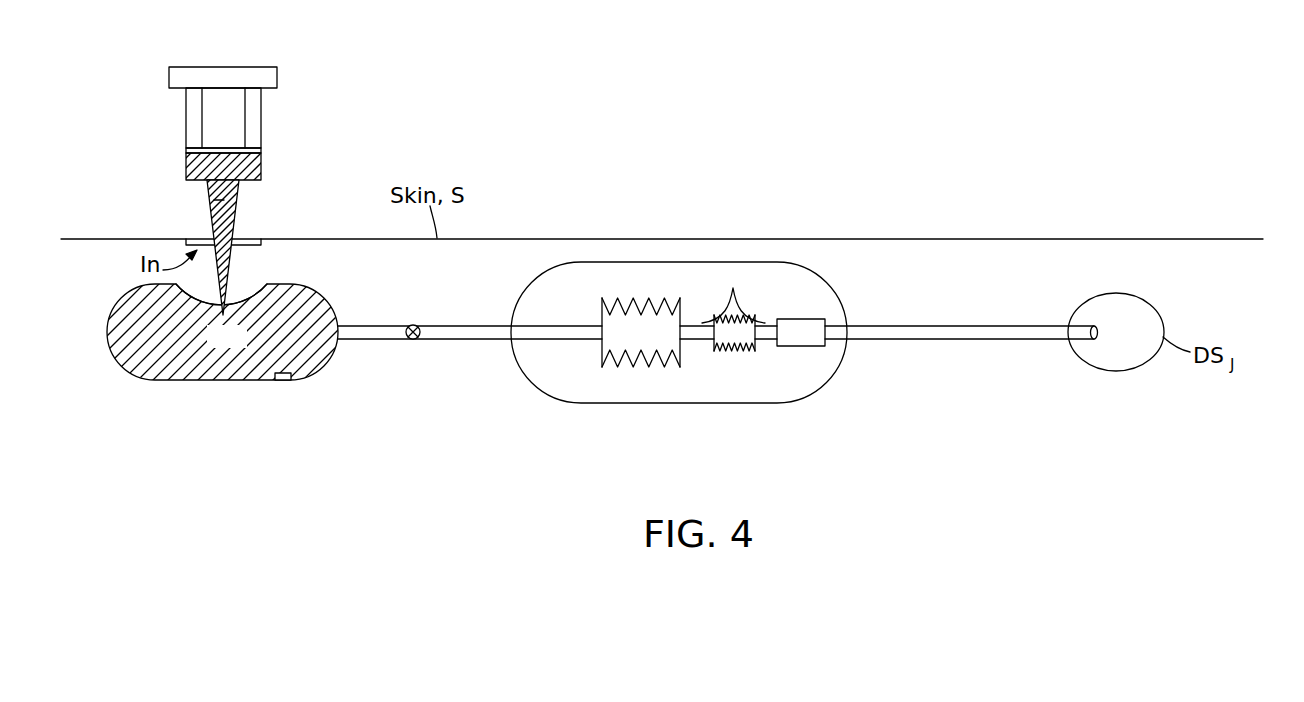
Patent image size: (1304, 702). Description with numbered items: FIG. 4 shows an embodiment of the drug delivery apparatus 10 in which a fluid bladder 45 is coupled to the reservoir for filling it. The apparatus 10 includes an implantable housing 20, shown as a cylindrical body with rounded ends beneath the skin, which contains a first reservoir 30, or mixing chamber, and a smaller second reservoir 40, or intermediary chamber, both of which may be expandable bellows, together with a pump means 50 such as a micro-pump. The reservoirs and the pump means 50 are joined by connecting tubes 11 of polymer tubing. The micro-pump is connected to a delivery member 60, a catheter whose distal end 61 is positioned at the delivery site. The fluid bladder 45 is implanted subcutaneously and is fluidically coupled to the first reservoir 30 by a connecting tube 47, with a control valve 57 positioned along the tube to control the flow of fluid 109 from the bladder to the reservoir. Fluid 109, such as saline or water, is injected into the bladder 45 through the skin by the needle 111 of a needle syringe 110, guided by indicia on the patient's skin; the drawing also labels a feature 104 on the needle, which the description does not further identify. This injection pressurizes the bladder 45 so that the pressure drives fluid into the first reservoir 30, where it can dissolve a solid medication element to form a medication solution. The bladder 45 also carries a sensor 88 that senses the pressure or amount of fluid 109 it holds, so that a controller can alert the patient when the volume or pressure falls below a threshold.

The apparatus 10 is at (679, 336).
The connecting tubes 11 is at (733, 293).
The housing 20 is at (690, 388).
The first reservoir 30 is at (640, 312).
The second reservoir 40 is at (736, 337).
The fluid bladder 45 is at (218, 380).
The connecting tube 47 is at (450, 340).
The pump means 50 is at (800, 325).
The control valve 57 is at (413, 325).
The delivery member 60 is at (948, 325).
The distal end 61 is at (1094, 341).
The sensor 88 is at (283, 381).
The needle lumen 104 is at (217, 198).
The fluid 109 is at (221, 318).
The needle syringe 110 is at (263, 117).
The needle 111 is at (236, 213).